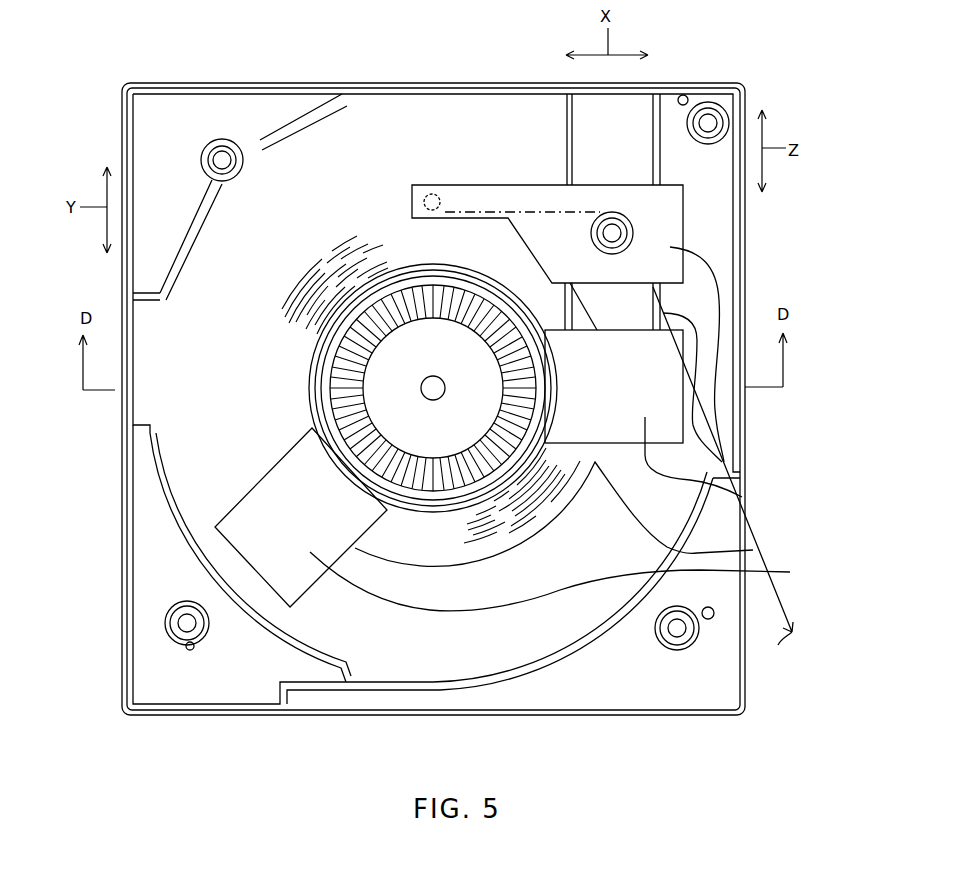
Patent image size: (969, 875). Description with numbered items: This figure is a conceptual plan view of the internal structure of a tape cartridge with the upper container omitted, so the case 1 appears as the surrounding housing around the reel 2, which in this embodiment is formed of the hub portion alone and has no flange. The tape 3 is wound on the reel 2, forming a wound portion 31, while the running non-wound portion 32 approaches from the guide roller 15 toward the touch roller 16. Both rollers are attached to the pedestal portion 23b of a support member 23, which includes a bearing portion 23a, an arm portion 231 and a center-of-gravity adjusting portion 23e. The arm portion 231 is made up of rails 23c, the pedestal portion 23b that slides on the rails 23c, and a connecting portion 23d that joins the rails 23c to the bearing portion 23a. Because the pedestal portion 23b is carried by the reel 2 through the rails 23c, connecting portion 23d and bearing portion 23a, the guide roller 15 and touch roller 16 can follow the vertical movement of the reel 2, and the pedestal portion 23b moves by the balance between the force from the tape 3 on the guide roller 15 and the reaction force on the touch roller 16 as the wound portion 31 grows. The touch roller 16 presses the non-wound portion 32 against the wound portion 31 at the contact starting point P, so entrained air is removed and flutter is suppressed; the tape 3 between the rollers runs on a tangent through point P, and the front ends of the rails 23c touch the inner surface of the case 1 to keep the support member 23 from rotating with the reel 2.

The case 1 is at (526, 83).
The reel 2 is at (402, 258).
The tape 3 is at (783, 614).
The guide roller 15 is at (612, 233).
The touch roller 16 is at (423, 185).
The support member 23 is at (836, 452).
The bearing portion 23a is at (753, 550).
The pedestal portion 23b is at (724, 462).
The rails 23c is at (722, 462).
The connecting portion 23d is at (742, 497).
The center-of-gravity adjusting portion 23e is at (522, 519).
The arm portion 231 is at (790, 432).
The wound portion 31 is at (330, 250).
The non-wound portion 32 is at (523, 212).
The contact starting point P is at (423, 210).